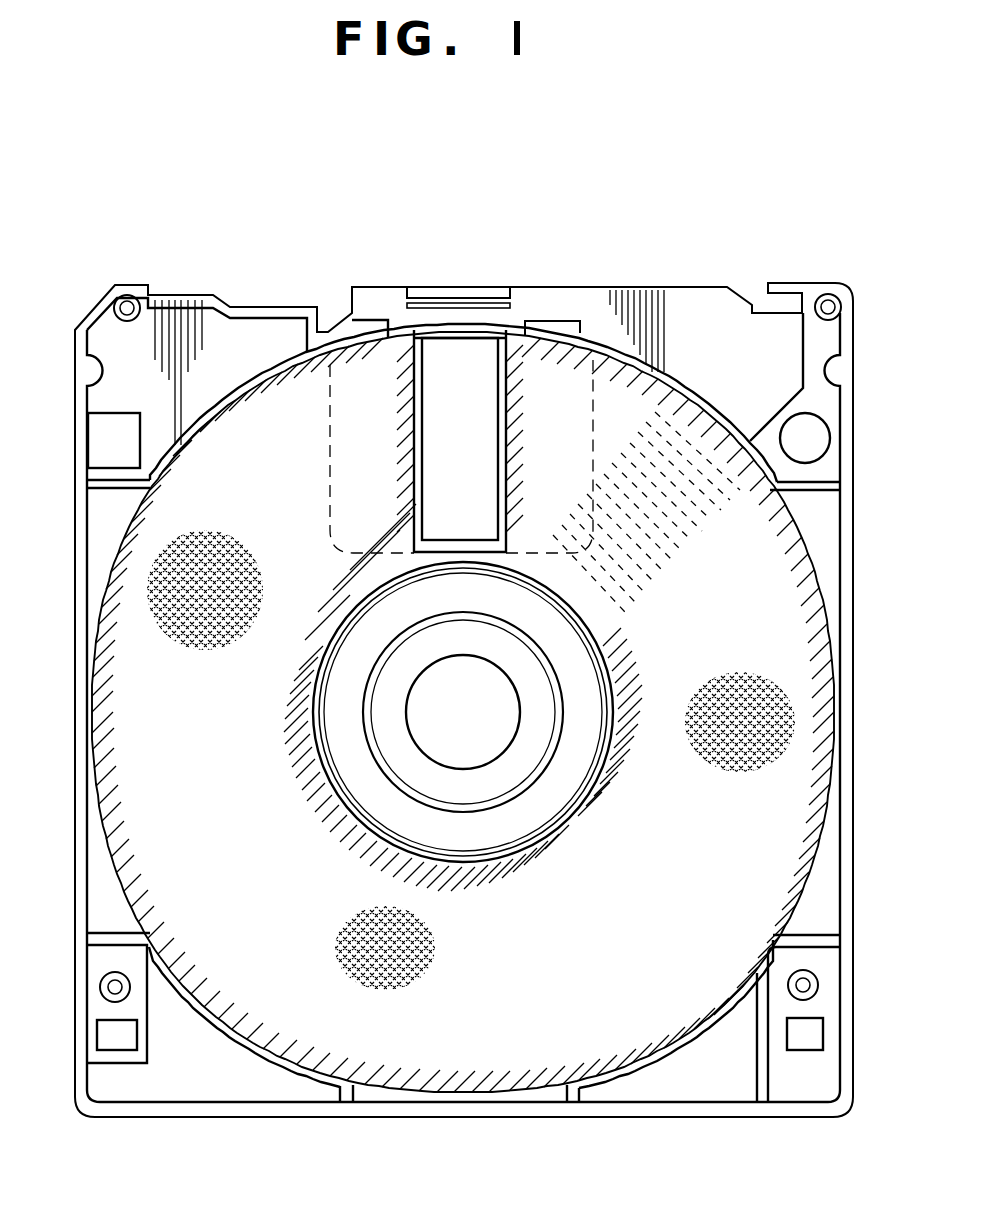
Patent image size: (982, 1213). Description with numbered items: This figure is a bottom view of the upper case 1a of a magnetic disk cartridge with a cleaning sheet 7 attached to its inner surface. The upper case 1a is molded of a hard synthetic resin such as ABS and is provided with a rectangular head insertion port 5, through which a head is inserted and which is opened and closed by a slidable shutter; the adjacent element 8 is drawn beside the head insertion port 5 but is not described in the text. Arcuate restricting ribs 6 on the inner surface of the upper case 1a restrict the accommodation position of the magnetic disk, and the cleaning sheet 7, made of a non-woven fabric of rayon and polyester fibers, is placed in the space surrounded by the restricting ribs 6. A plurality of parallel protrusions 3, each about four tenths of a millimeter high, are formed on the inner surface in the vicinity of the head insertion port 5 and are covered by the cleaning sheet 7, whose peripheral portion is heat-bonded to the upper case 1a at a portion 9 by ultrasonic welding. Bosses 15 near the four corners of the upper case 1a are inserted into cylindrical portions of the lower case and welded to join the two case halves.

The upper case 1a is at (665, 300).
The protrusions 3 is at (683, 565).
The head insertion port 5 is at (500, 370).
The restricting ribs 6 is at (237, 390).
The cleaning sheet 7 is at (157, 590).
The head window 8 is at (415, 378).
The heat-bonded portion 9 is at (816, 582).
The bosses 15 is at (127, 296).